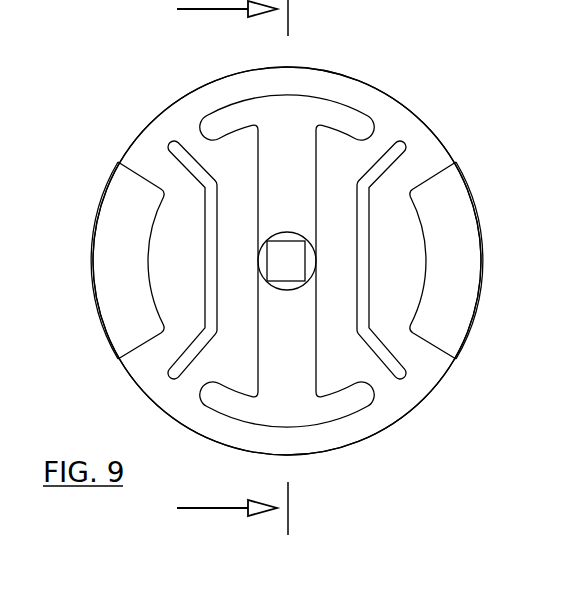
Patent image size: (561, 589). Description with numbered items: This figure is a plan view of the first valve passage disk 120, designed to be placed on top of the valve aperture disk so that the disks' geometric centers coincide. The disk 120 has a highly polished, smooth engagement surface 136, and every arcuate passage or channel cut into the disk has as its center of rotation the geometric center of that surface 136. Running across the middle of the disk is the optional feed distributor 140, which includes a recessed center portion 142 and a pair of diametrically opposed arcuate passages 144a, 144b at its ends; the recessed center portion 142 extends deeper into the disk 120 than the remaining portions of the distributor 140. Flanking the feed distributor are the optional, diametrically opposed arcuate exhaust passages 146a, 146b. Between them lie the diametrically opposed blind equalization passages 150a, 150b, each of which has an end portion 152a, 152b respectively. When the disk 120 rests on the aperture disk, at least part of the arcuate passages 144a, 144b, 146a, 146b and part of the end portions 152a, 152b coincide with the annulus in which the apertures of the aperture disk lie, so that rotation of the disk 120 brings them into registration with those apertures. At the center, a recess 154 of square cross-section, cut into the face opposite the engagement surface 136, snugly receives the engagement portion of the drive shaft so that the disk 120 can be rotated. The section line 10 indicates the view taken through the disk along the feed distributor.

The section line / motor 10 is at (232, 274).
The valve passage disk 120 is at (197, 85).
The engagement surface 136 is at (185, 127).
The feed distributor 140 is at (300, 198).
The recessed center portion 142 is at (373, 338).
The arcuate passage 144a is at (310, 123).
The arcuate passage 144b is at (310, 413).
The arcuate exhaust passage 146a is at (72, 260).
The arcuate exhaust passage 146b is at (501, 260).
The blind equalization passage 150a is at (110, 260).
The blind equalization passage 150b is at (465, 260).
The end portion 152a is at (174, 150).
The end portion 152b is at (402, 150).
The recess 154 is at (409, 239).